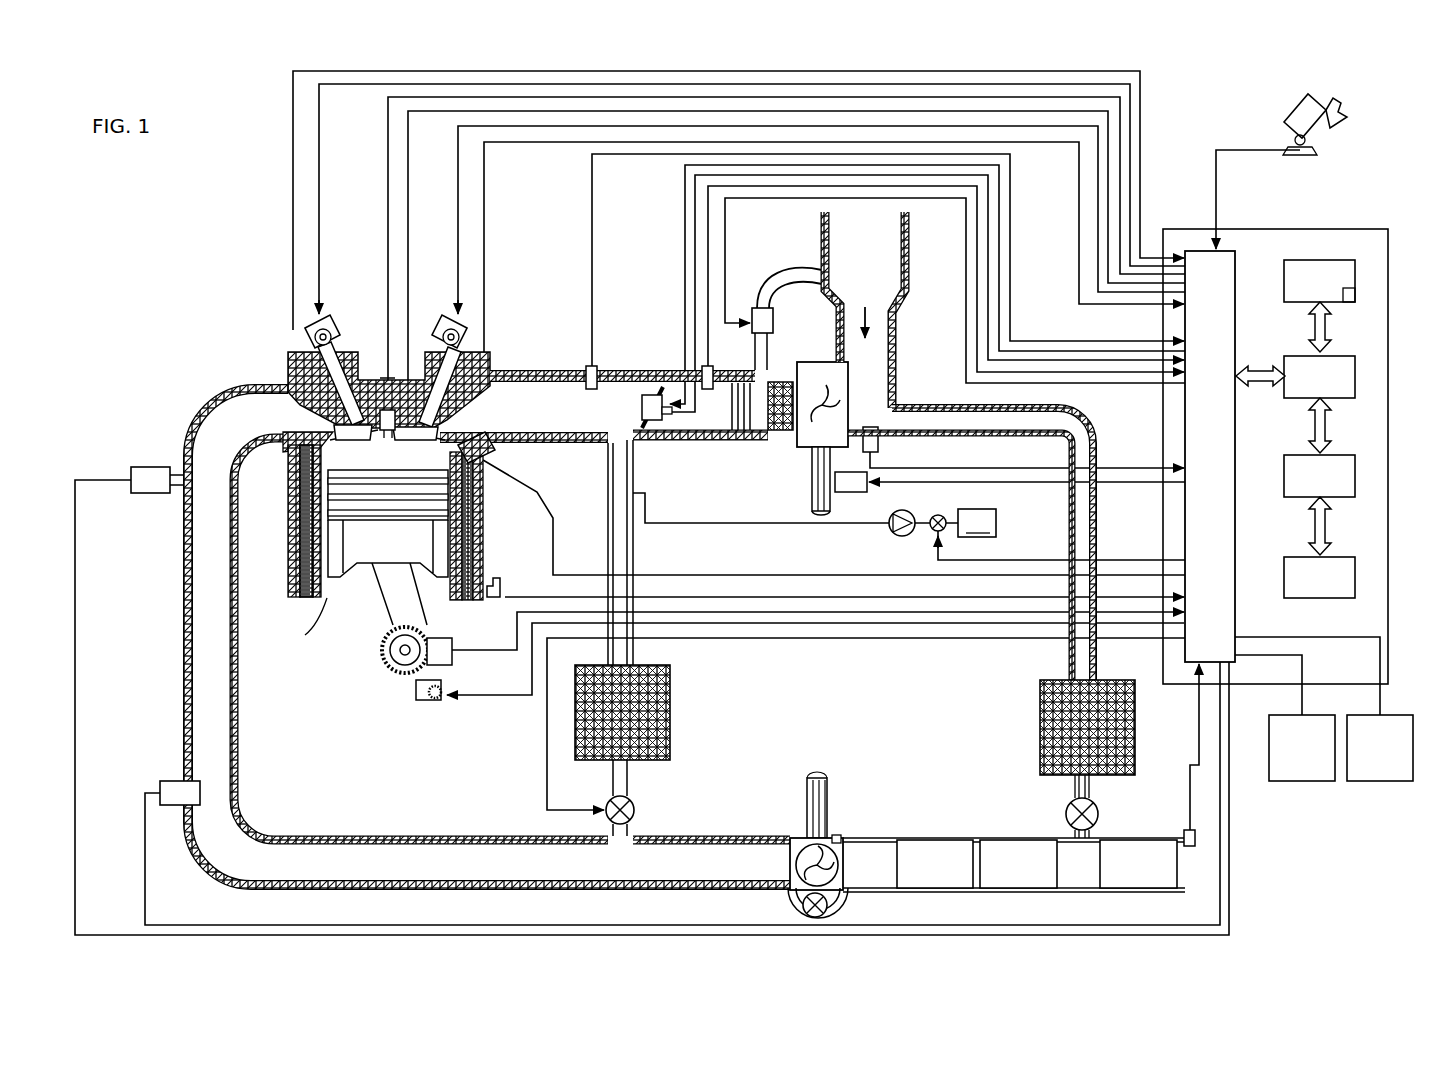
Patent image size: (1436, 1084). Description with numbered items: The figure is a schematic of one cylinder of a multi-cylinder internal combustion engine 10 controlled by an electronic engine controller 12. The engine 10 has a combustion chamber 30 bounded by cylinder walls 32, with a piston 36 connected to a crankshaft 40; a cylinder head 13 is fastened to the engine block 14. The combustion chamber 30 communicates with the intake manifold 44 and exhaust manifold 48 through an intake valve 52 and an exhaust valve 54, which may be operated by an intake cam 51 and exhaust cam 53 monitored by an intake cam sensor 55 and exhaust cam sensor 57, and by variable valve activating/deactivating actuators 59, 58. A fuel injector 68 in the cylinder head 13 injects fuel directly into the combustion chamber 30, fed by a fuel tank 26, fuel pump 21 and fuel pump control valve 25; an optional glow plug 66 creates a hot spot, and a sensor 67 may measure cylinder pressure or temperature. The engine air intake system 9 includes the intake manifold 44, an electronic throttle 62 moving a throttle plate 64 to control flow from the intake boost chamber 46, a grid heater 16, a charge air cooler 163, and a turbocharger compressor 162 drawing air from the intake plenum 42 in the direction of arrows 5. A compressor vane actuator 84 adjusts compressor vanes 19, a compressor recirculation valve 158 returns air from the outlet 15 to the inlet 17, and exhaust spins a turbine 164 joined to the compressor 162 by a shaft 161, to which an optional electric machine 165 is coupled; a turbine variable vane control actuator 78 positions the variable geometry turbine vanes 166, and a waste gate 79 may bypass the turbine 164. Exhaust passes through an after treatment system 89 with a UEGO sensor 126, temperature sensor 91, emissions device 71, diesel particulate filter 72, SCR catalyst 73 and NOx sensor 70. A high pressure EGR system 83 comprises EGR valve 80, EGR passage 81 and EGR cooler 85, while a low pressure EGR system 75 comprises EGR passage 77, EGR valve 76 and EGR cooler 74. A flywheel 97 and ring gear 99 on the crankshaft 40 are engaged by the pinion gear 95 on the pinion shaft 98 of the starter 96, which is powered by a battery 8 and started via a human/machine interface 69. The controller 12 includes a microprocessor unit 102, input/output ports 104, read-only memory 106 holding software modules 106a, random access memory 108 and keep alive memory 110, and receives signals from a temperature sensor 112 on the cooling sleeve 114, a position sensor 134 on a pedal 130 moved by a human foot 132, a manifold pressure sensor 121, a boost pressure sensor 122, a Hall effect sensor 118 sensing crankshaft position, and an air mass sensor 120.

The arrows 5 is at (868, 320).
The battery 8 is at (1380, 748).
The engine air intake system 9 is at (663, 296).
The internal combustion engine 10 is at (225, 300).
The electronic engine controller 12 is at (1348, 230).
The cylinder head 13 is at (453, 393).
The engine block 14 is at (292, 462).
The outlet of compressor 15 is at (768, 350).
The grid heater 16 is at (740, 440).
The inlet of compressor 17 is at (850, 385).
The compressor vanes 19 is at (840, 410).
The fuel pump 21 is at (908, 514).
The fuel pump control valve 25 is at (934, 530).
The fuel tank 26 is at (977, 523).
The combustion chamber 30 is at (316, 532).
The cylinder walls 32 is at (298, 630).
The piston 36 is at (372, 580).
The crankshaft 40 is at (395, 672).
The intake plenum 42 is at (876, 286).
The intake manifold 44 is at (615, 405).
The intake boost chamber 46 is at (721, 419).
The exhaust manifold 48 is at (270, 422).
The intake cam 51 is at (445, 318).
The intake valve 52 is at (430, 424).
The exhaust cam 53 is at (330, 318).
The exhaust valve 54 is at (300, 415).
The intake cam sensor 55 is at (468, 345).
The exhaust cam sensor 57 is at (300, 332).
The variable valve activating/deactivating actuator 58 is at (340, 340).
The variable valve activating/deactivating actuator 59 is at (440, 332).
The electronic throttle 62 is at (652, 392).
The throttle plate 64 is at (662, 398).
The glow plug 66 is at (390, 395).
The pressure sensor 67 is at (408, 410).
The fuel injector 68 is at (468, 455).
The human/machine interface 69 is at (1302, 748).
The NOx sensor 70 is at (1186, 828).
The emissions device 71 is at (935, 864).
The diesel particulate filter 72 is at (1018, 864).
The selective catalytic reduction catalyst 73 is at (1138, 864).
The EGR cooler 74 is at (1135, 728).
The low pressure EGR system 75 is at (1003, 754).
The EGR valve 76 is at (1098, 808).
The EGR passage 77 is at (1090, 510).
The turbine variable vane control actuator 78 is at (842, 834).
The waste gate 79 is at (830, 905).
The EGR valve 80 is at (606, 798).
The EGR passage 81 is at (606, 475).
The high pressure EGR system 83 is at (528, 776).
The compressor vane actuator 84 is at (800, 362).
The EGR cooler 85 is at (672, 702).
The after treatment system 89 is at (158, 428).
The temperature sensor 91 is at (168, 780).
The pinion gear 95 is at (440, 703).
The starter 96 is at (442, 700).
The flywheel 97 is at (380, 655).
The pinion shaft 98 is at (430, 700).
The ring gear 99 is at (400, 690).
The microprocessor unit 102 is at (1357, 368).
The input/output ports 104 is at (1240, 262).
The read-only memory 106 is at (1357, 280).
The software modules 106a is at (1355, 296).
The random access memory 108 is at (1357, 472).
The keep alive memory 110 is at (1357, 572).
The temperature sensor 112 is at (498, 585).
The cooling sleeve 114 is at (302, 512).
The Hall effect sensor 118 is at (452, 642).
The air mass sensor 120 is at (878, 442).
The pressure sensor 121 is at (588, 365).
The pressure sensor 122 is at (730, 360).
The universal exhaust gas oxygen sensor 126 is at (131, 474).
The torque or power demand pedal 130 is at (1292, 128).
The human foot 132 is at (1340, 110).
The position sensor 134 is at (1312, 148).
The compressor recirculation valve 158 is at (756, 306).
The shaft 161 is at (812, 506).
The turbocharger compressor 162 is at (814, 470).
The charge air cooler 163 is at (780, 432).
The turbine 164 is at (800, 836).
The electric machine 165 is at (848, 492).
The variable geometry turbine vanes 166 is at (838, 866).